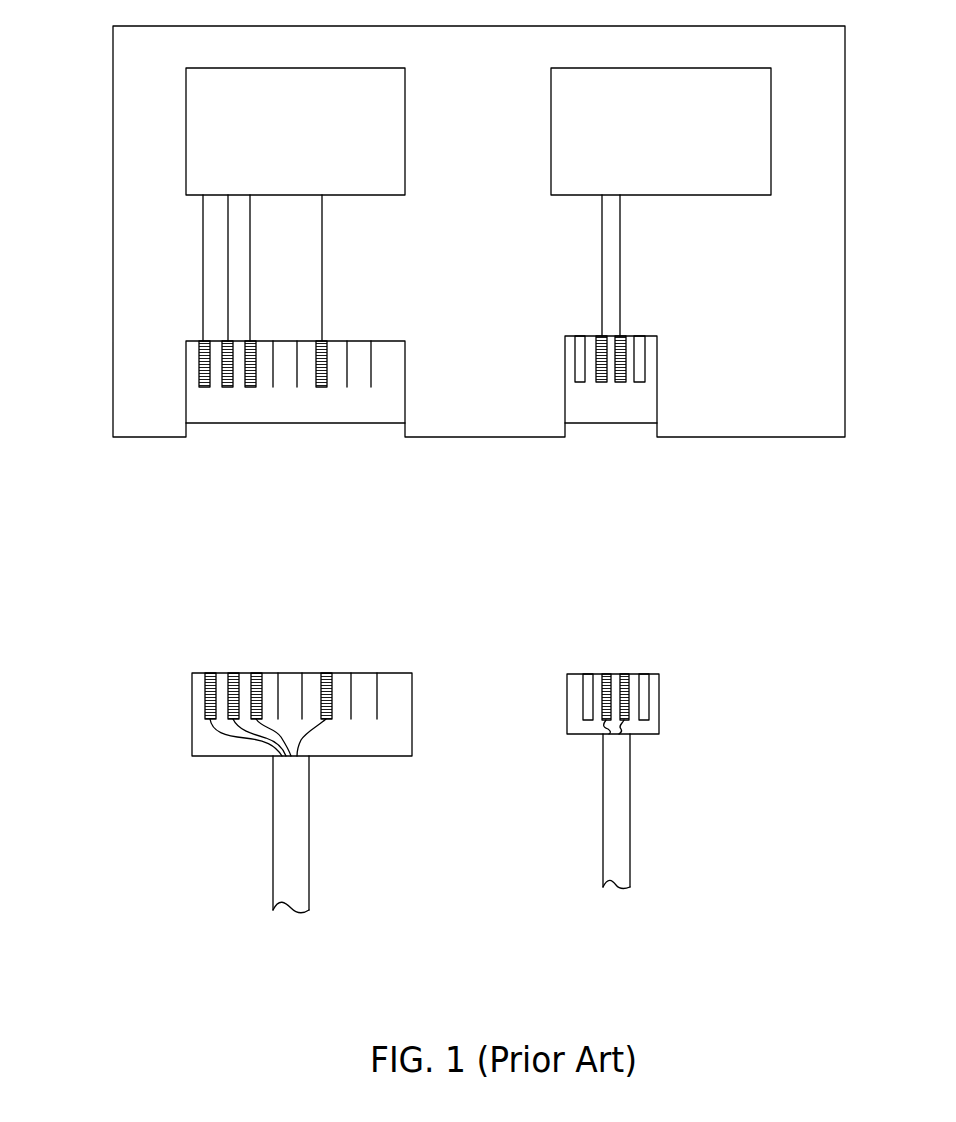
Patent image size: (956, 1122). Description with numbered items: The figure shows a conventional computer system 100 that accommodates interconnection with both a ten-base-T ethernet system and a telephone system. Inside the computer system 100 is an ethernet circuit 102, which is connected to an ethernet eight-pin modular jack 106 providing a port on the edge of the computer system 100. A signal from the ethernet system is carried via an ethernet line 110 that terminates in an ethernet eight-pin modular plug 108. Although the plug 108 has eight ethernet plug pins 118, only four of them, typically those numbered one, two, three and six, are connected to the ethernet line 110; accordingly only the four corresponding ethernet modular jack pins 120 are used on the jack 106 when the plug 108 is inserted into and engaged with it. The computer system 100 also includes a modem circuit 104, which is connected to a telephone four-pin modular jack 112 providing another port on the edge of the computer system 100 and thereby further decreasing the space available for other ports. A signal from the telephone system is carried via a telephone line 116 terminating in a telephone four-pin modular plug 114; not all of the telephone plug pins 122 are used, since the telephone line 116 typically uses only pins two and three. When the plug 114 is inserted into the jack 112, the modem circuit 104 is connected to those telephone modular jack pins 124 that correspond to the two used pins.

The computer system 100 is at (113, 125).
The ethernet circuit 102 is at (368, 177).
The modem circuit 104 is at (735, 176).
The ethernet 8-pin modular jack 106 is at (405, 381).
The ethernet 8-pin modular plug 108 is at (192, 710).
The ethernet line 110 is at (273, 830).
The telephone 4-pin modular jack 112 is at (657, 375).
The telephone 4-pin modular plug 114 is at (659, 700).
The telephone line 116 is at (630, 802).
The ethernet plug pins 118 is at (301, 624).
The ethernet modular jack pins 120 is at (290, 455).
The telephone plug pins 122 is at (613, 622).
The modem jack opening 124 is at (610, 455).